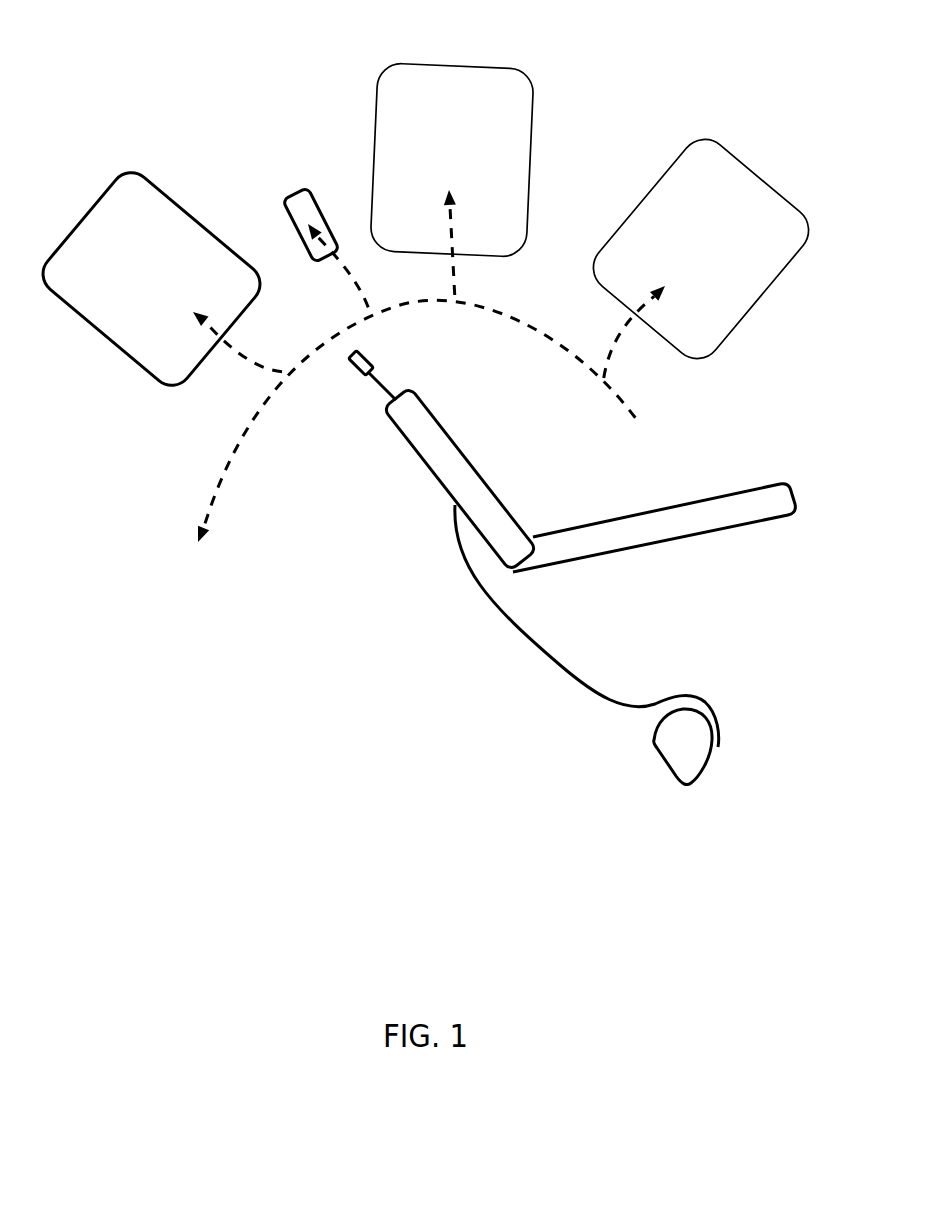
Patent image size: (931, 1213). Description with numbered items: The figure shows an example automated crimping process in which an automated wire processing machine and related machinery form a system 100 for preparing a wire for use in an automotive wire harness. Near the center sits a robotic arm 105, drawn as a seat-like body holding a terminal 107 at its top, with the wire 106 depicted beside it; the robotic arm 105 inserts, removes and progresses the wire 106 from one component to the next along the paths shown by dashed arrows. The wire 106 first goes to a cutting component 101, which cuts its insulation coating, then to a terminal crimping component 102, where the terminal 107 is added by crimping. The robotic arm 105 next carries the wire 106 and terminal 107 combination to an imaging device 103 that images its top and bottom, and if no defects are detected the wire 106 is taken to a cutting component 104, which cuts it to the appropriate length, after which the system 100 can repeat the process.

The system 100 is at (298, 745).
The cutting component 101 is at (773, 293).
The terminal crimping component 102 is at (533, 188).
The imaging device 103 is at (293, 192).
The cutting component 104 is at (88, 333).
The robotic arm 105 is at (418, 462).
The wire 106 is at (655, 748).
The terminal 107 is at (367, 358).